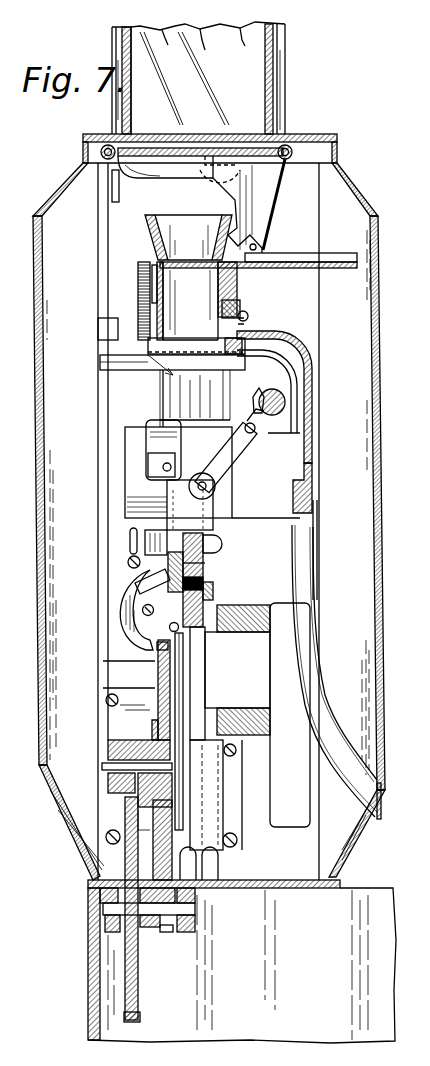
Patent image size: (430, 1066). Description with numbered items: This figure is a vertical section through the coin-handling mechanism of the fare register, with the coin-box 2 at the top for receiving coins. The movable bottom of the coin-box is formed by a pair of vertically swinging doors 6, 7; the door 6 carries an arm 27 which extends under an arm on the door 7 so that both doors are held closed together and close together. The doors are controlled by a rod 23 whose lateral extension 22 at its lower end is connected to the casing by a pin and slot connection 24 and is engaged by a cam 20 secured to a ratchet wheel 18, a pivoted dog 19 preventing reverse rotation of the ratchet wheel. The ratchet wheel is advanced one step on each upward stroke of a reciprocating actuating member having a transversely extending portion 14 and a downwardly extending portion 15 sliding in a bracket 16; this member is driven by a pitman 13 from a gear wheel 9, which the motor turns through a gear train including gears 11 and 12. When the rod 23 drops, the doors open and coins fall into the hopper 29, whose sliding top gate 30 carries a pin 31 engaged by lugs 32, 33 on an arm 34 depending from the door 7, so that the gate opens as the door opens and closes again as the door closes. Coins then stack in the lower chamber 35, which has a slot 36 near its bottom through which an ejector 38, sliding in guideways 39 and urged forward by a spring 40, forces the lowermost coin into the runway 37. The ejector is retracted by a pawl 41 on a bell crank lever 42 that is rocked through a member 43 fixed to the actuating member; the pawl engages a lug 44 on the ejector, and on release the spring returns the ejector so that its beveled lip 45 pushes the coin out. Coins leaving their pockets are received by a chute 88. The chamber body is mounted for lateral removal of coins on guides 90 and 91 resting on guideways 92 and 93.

The coin-box 2 is at (286, 60).
The door 6 is at (152, 148).
The door 7 is at (238, 148).
The gear wheel 9 is at (168, 718).
The gear 11 is at (138, 997).
The gear 12 is at (166, 932).
The pitman 13 is at (185, 697).
The transversely extending portion 14 is at (208, 573).
The downwardly extending portion 15 is at (200, 660).
The bracket 16 is at (212, 806).
The ratchet wheel 18 is at (159, 628).
The dog 19 is at (136, 584).
The cam 20 is at (155, 676).
The lateral extension 22 is at (120, 637).
The rod 23 is at (110, 506).
The pin and slot connection 24 is at (129, 541).
The arm 27 is at (168, 176).
The hopper 29 is at (160, 232).
The gate 30 is at (192, 260).
The pin 31 is at (250, 247).
The lug 32 is at (240, 232).
The lug 33 is at (264, 250).
The arm 34 is at (270, 172).
The lower chamber 35 is at (249, 316).
The slot 36 is at (280, 331).
The runway 37 is at (313, 416).
The ejector 38 is at (175, 374).
The guideways 39 is at (138, 371).
The spring 40 is at (138, 290).
The pawl 41 is at (260, 406).
The bell crank lever 42 is at (228, 465).
The member 43 is at (182, 492).
The lug 44 is at (222, 378).
The lip 45 is at (218, 338).
The chute 88 is at (350, 712).
The guide 90 is at (140, 312).
The guide 91 is at (238, 310).
The guideway 92 is at (150, 341).
The guideway 93 is at (258, 352).